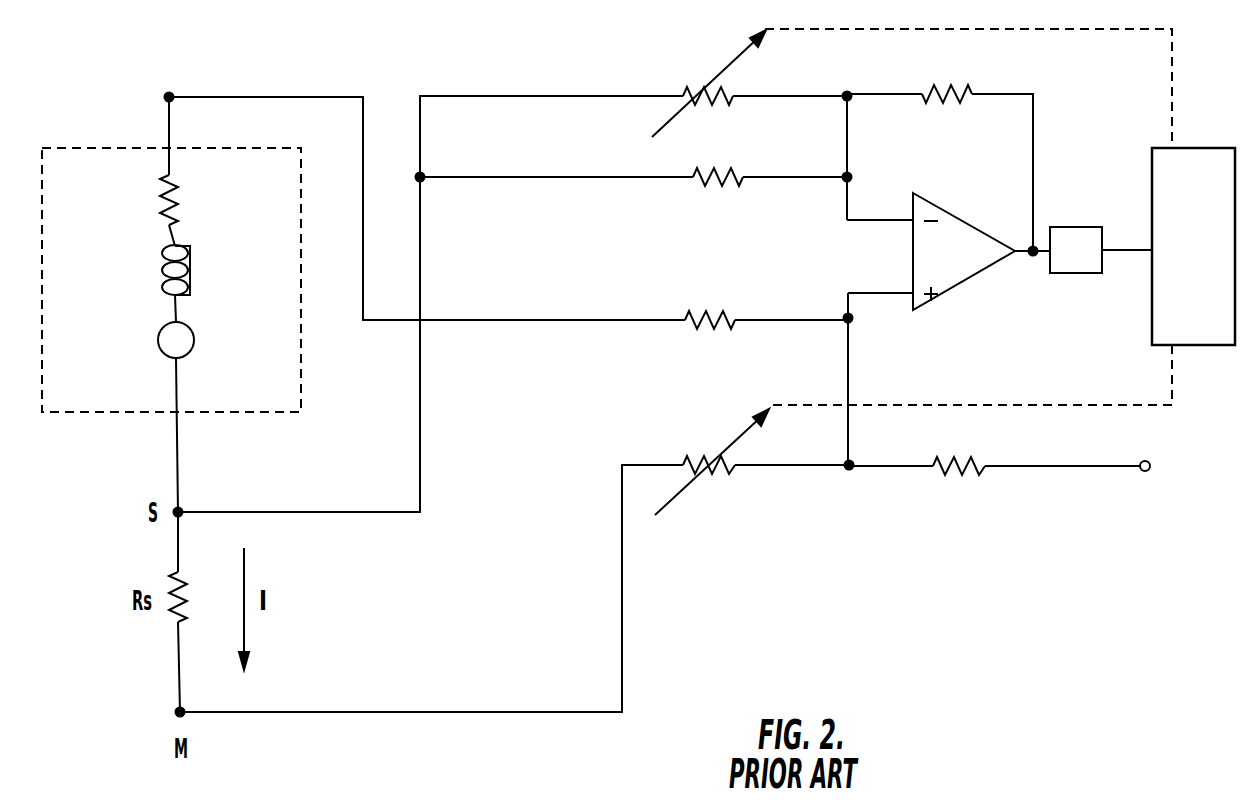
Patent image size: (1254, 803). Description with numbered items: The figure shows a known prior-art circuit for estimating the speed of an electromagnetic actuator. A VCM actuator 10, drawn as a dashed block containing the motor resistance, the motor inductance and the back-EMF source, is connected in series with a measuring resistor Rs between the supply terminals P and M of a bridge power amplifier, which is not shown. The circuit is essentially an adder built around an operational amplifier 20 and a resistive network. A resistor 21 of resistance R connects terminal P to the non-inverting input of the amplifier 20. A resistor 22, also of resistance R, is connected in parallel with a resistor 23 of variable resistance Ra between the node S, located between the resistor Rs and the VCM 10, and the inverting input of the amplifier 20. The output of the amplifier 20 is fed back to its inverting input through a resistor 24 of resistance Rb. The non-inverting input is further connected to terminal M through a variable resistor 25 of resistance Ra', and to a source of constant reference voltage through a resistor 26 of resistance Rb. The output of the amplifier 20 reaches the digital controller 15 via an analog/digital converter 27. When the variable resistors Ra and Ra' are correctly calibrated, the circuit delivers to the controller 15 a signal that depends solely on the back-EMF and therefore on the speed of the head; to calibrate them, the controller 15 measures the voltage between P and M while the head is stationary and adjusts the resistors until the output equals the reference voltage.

The VCM actuator 10 is at (82, 146).
The digital controller 15 is at (1198, 148).
The operational amplifier 20 is at (960, 224).
The resistor 21 is at (690, 323).
The resistor 22 is at (695, 181).
The resistor of variable resistance Ra 23 is at (683, 93).
The resistor 24 is at (966, 92).
The variable resistor 25 is at (736, 469).
The resistor 26 is at (985, 470).
The analog/digital converter 27 is at (1085, 275).